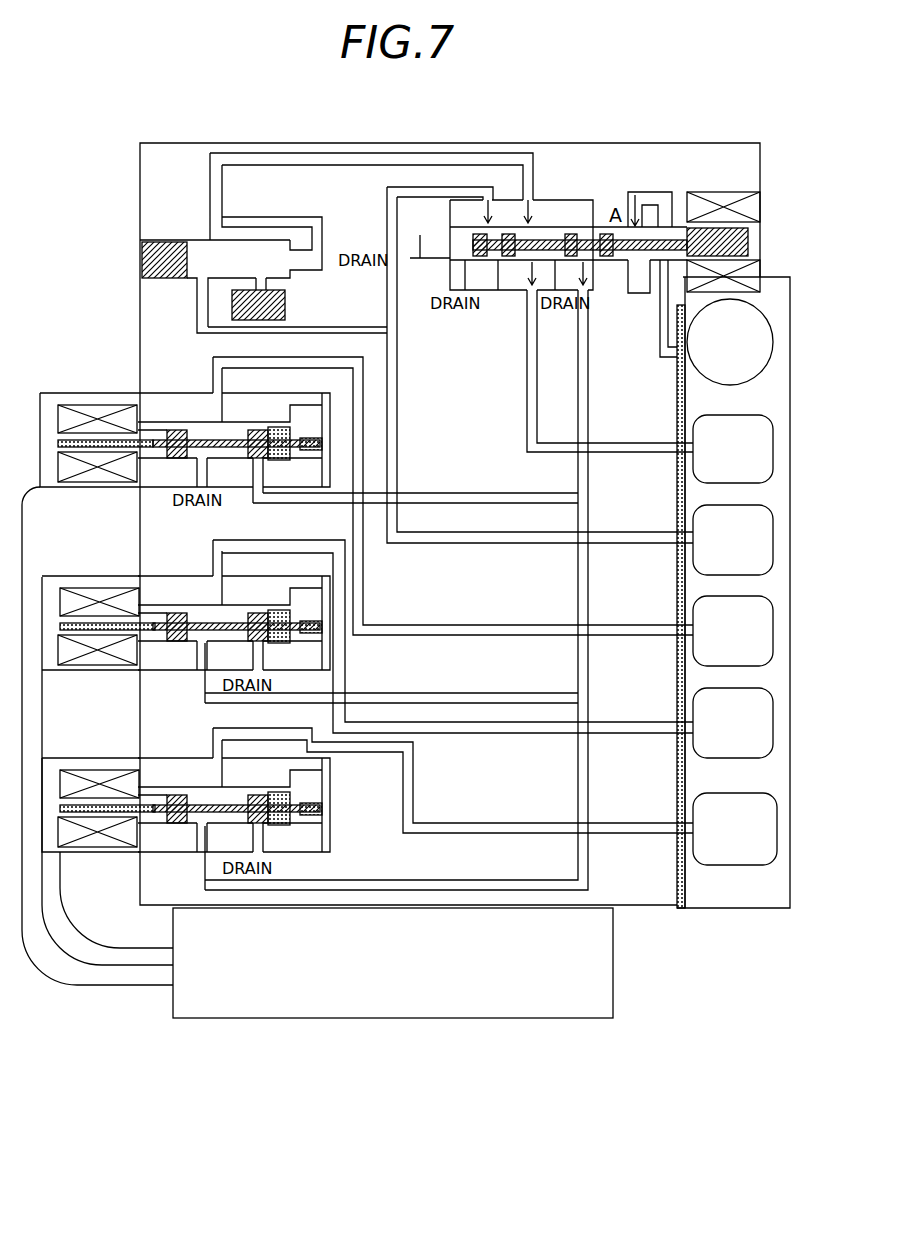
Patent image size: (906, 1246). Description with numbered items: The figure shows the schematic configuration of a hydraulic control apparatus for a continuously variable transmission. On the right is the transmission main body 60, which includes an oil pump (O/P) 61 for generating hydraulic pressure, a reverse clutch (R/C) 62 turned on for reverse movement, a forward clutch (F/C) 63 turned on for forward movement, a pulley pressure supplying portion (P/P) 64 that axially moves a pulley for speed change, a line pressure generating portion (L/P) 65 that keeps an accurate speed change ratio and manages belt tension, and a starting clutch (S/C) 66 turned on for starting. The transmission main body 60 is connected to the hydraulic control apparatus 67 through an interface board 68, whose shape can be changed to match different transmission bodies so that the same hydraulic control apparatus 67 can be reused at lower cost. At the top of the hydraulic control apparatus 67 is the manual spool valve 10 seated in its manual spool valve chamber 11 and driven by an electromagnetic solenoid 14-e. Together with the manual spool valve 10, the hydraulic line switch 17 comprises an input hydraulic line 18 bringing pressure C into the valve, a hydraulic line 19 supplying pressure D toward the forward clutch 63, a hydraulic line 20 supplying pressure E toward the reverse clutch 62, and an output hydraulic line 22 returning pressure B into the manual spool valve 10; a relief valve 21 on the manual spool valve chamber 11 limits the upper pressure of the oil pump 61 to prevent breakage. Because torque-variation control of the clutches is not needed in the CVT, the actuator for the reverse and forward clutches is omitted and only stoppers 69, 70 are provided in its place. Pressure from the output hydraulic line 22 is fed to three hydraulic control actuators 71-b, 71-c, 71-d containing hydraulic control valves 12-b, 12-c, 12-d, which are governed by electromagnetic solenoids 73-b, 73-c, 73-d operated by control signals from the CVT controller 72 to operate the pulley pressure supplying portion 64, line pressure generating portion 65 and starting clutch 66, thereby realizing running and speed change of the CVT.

The manual spool valve 10 is at (748, 240).
The manual spool valve chamber 11 is at (433, 225).
The electromagnetic solenoid 14-e is at (712, 195).
The hydraulic line switch 17 is at (582, 198).
The input hydraulic line 18 is at (526, 198).
The hydraulic line 19 is at (487, 197).
The hydraulic line 20 is at (513, 292).
The relief valve 21 is at (648, 292).
The output hydraulic line 22 is at (588, 290).
The transmission main body 60 is at (765, 898).
The oil pump (O/P) 61 is at (790, 340).
The reverse clutch (R/C) 62 is at (790, 435).
The forward clutch (F/C) 63 is at (790, 525).
The pulley pressure supplying portion (P/P) 64 is at (790, 615).
The line pressure generating portion (L/P) 65 is at (790, 712).
The starting clutch (S/C) 66 is at (790, 815).
The hydraulic control apparatus 67 is at (655, 893).
The interface board 68 is at (683, 912).
The stopper 69 is at (142, 258).
The stopper 70 is at (232, 305).
The hydraulic control actuator 71-b is at (75, 375).
The hydraulic control actuator 71-c is at (80, 562).
The hydraulic control actuator 71-d is at (102, 743).
The CVT controller 72 is at (445, 1018).
The electromagnetic solenoid 73-b is at (96, 486).
The electromagnetic solenoid 73-c is at (100, 657).
The electromagnetic solenoid 73-d is at (103, 840).
The hydraulic control valve 12-b is at (176, 430).
The hydraulic control valve 12-c is at (176, 613).
The hydraulic control valve 12-d is at (176, 795).